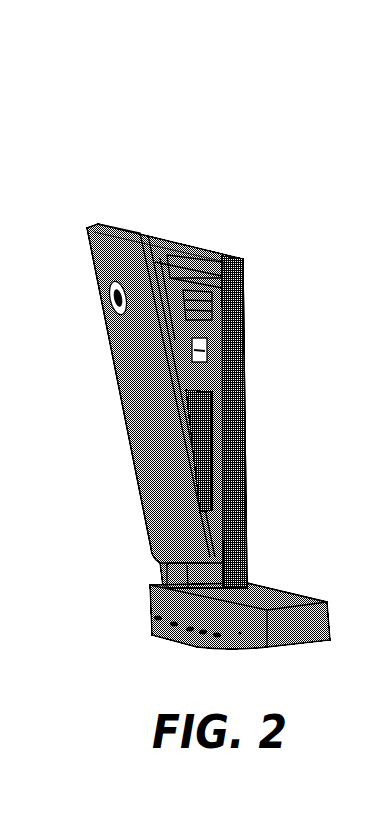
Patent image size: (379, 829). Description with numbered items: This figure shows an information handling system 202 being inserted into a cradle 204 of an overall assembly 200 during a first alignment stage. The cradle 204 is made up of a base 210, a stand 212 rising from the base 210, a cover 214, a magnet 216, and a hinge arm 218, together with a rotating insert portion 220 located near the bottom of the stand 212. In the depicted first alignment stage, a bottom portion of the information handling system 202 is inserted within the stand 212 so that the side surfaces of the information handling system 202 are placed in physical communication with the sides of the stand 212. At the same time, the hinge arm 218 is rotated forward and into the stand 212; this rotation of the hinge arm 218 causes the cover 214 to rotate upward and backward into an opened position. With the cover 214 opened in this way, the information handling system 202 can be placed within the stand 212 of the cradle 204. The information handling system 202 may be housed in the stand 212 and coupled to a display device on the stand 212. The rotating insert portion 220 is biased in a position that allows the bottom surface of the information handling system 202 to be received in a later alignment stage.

The display device 200 is at (141, 117).
The information handling system 202 is at (100, 264).
The cradle 204 is at (272, 518).
The base 210 is at (287, 598).
The stand 212 is at (230, 450).
The cover 214 is at (222, 262).
The magnet 216 is at (200, 355).
The hinge arm 218 is at (203, 322).
The rotating insert portion 220 is at (200, 590).